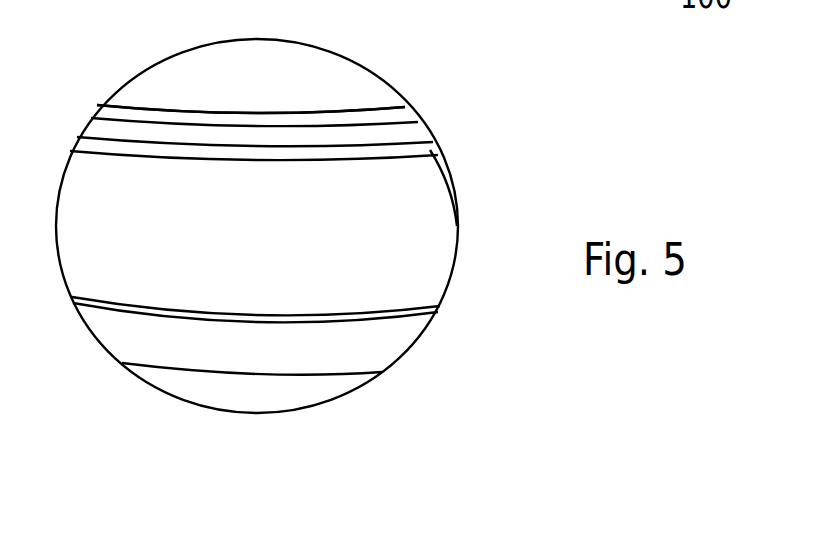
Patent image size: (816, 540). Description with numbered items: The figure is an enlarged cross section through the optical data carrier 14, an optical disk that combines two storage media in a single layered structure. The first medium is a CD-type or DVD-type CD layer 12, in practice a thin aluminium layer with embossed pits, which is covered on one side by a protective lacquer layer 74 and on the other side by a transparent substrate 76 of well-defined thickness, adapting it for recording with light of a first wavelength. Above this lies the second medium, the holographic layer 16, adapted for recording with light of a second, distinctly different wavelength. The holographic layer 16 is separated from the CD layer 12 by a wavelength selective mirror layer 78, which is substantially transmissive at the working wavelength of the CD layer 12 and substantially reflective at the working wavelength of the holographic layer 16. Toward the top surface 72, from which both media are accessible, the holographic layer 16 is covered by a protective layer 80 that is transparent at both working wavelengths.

The optical data carrier 14 is at (93, 370).
The transparent substrate 76 is at (450, 236).
The top surface 72 is at (156, 106).
The protective layer 80 is at (403, 108).
The holographic layer 16 is at (412, 125).
The wavelength selective mirror layer 78 is at (430, 142).
The CD layer 12 is at (440, 305).
The protective lacquer layer 74 is at (400, 352).